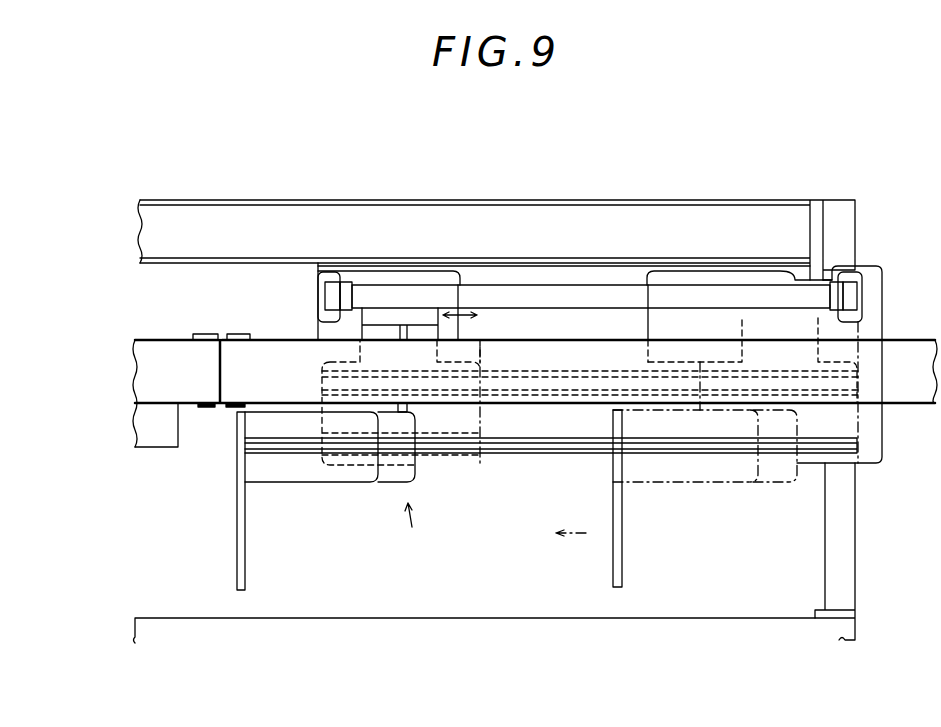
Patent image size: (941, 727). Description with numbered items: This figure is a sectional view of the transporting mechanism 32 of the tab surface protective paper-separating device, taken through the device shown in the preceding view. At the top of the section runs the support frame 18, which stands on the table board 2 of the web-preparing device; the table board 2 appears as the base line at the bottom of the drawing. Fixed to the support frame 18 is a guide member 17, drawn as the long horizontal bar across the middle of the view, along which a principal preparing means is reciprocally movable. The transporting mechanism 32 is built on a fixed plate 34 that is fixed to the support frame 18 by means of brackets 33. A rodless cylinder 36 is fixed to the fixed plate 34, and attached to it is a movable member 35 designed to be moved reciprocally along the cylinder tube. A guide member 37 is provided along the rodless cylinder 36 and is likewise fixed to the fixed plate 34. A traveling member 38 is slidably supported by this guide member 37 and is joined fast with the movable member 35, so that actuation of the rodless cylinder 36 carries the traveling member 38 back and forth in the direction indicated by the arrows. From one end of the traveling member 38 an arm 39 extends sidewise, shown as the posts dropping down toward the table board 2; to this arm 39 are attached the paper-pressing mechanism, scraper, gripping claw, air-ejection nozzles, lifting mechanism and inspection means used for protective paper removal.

The table board 2 is at (496, 616).
The guide member 17 is at (162, 336).
The support frame 18 is at (603, 226).
The transporting mechanism 32 is at (492, 533).
The bracket 33 is at (400, 268).
The fixed plate 34 is at (533, 469).
The movable member 35 is at (378, 310).
The rodless cylinder 36 is at (501, 298).
The guide member 37 is at (556, 372).
The traveling member 38 is at (700, 362).
The arm 39 is at (237, 530).